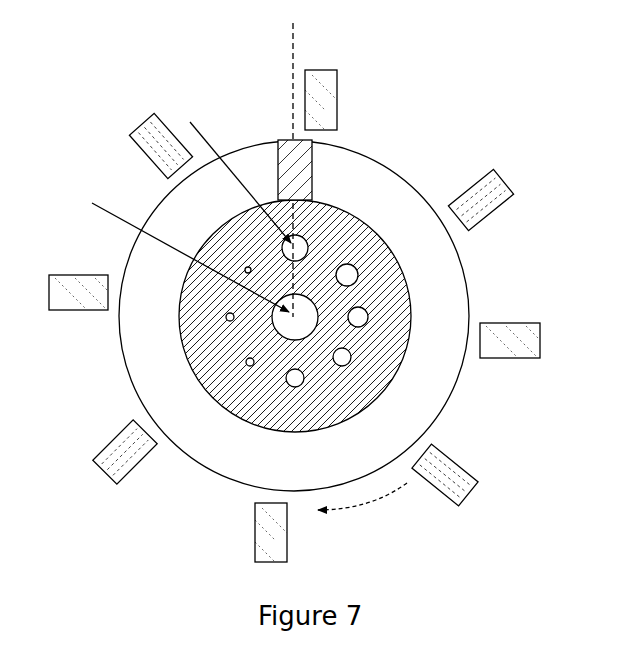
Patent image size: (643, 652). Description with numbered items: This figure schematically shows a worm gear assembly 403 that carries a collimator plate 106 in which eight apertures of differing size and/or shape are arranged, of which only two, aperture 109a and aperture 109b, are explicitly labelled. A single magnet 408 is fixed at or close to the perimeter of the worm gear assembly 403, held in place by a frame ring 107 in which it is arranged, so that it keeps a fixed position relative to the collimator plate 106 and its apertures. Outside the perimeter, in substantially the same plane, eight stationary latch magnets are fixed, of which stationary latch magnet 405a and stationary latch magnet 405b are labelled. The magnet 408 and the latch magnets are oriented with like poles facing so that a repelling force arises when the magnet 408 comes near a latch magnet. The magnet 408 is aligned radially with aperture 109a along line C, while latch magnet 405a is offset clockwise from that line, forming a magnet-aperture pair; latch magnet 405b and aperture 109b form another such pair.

The worm gear assembly 403 is at (574, 190).
The stationary latch magnet 405a is at (337, 110).
The stationary latch magnet 405b is at (460, 487).
The magnet 408 is at (288, 158).
The frame ring 107 is at (137, 270).
The collimator plate 106 is at (180, 331).
The aperture 109a is at (302, 243).
The aperture 109b is at (343, 366).